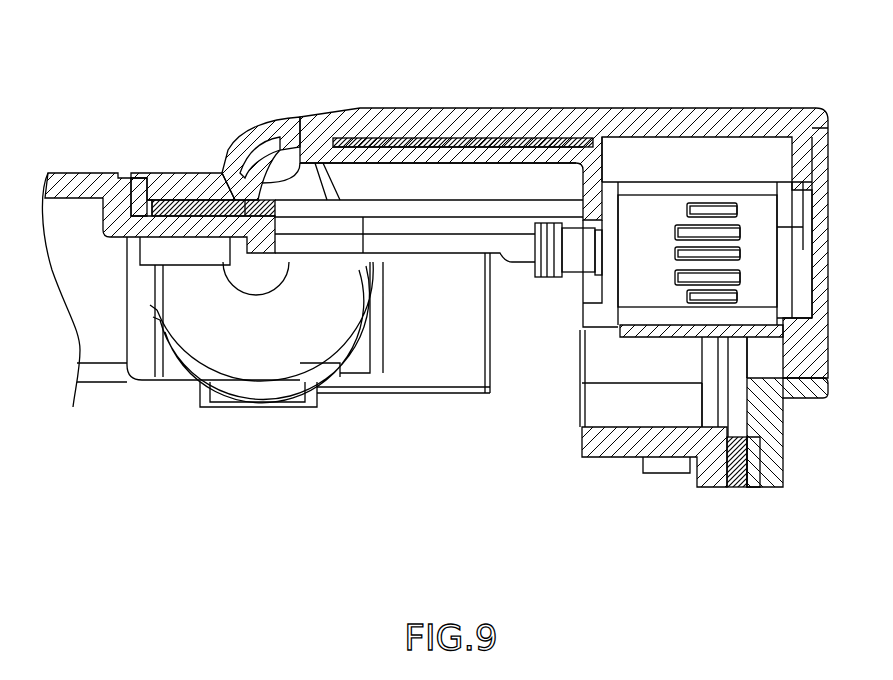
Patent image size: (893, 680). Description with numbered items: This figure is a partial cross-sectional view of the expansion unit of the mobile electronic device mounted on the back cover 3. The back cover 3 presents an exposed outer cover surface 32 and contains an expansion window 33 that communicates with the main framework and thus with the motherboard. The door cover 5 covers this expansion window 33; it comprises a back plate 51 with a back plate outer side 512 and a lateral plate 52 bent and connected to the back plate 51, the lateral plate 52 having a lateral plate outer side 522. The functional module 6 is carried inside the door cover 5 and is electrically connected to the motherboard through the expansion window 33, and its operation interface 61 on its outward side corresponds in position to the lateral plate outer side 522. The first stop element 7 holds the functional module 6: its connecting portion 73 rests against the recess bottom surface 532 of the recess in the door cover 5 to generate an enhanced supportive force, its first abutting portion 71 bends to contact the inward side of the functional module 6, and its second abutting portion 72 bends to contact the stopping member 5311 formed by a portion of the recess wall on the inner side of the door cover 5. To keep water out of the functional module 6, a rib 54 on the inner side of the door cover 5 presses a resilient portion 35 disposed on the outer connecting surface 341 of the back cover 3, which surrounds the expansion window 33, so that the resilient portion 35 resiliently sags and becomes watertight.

The back cover 3 is at (63, 175).
The outer cover surface 32 is at (88, 173).
The outer connecting surface 341 is at (138, 205).
The back plate 51 is at (163, 200).
The resilient portion 35 is at (197, 200).
The rib 54 is at (243, 207).
The stopping member 5311 is at (247, 203).
The second abutting portion 72 is at (283, 180).
The recess bottom surface 532 is at (366, 142).
The first stop element 7 is at (407, 146).
The connecting portion 73 is at (448, 158).
The back plate outer side 512 is at (668, 108).
The first abutting portion 71 is at (595, 180).
The functional module 6 is at (706, 184).
The door cover 5 is at (587, 198).
The operation interface 61 is at (812, 243).
The expansion window 33 is at (716, 396).
The lateral plate outer side 522 is at (828, 390).
The lateral plate 52 is at (774, 482).